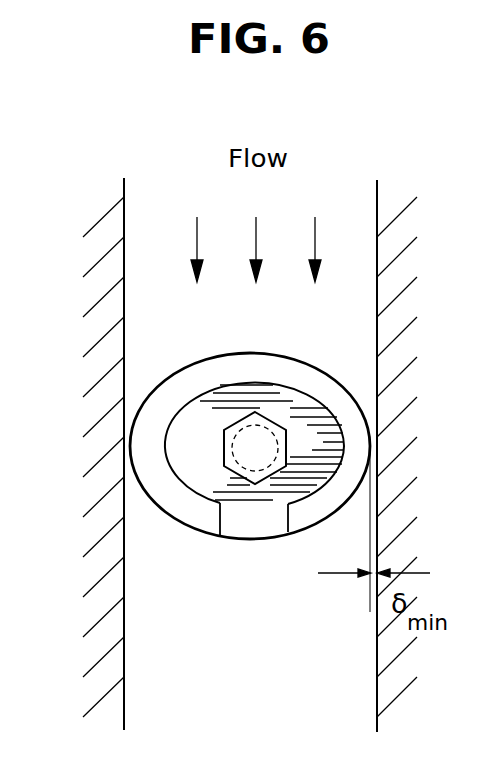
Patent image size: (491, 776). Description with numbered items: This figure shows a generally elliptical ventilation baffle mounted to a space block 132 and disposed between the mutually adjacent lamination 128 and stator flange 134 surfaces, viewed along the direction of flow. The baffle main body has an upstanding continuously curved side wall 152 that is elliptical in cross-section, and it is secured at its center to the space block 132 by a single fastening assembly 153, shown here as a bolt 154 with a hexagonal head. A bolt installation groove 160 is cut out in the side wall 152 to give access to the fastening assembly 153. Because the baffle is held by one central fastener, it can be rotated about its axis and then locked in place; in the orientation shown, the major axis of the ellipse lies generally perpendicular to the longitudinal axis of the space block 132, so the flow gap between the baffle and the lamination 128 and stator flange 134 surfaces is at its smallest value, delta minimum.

The lamination 128 is at (81, 271).
The stator flange 134 is at (452, 230).
The space block 132 is at (256, 694).
The upstanding continuously curved side wall 152 is at (215, 371).
The fastening assembly 153 is at (282, 414).
The bolt 154 is at (255, 484).
The bolt installation groove 160 is at (288, 518).